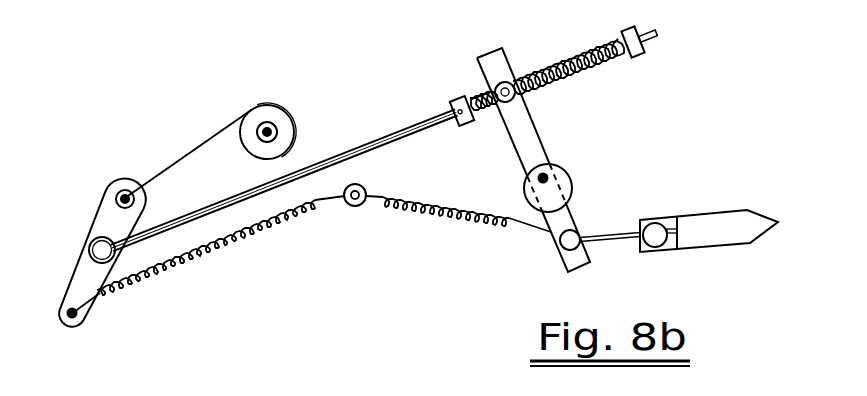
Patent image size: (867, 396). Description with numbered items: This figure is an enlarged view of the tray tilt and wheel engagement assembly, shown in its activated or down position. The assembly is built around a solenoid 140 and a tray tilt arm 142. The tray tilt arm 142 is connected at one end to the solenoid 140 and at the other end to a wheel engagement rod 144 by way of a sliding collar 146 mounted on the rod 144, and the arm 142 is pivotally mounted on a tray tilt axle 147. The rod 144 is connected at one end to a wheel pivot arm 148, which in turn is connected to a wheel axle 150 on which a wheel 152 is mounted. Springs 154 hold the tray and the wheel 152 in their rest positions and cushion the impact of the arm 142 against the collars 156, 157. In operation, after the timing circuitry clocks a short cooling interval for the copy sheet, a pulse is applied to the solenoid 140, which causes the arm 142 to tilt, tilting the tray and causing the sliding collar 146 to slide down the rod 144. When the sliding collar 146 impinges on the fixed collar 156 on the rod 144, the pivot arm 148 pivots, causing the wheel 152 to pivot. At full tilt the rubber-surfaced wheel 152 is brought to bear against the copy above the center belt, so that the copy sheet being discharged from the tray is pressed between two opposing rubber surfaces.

The solenoid 140 is at (698, 250).
The tray tilt arm 142 is at (543, 145).
The wheel engagement rod 144 is at (422, 119).
The sliding collar 146 is at (512, 102).
The tray tilt axle 147 is at (553, 180).
The wheel pivot arm 148 is at (78, 265).
The wheel axle 150 is at (122, 193).
The wheel 152 is at (272, 105).
The springs 154 is at (243, 252).
The fixed collar 156 is at (468, 124).
The collar 157 is at (642, 58).